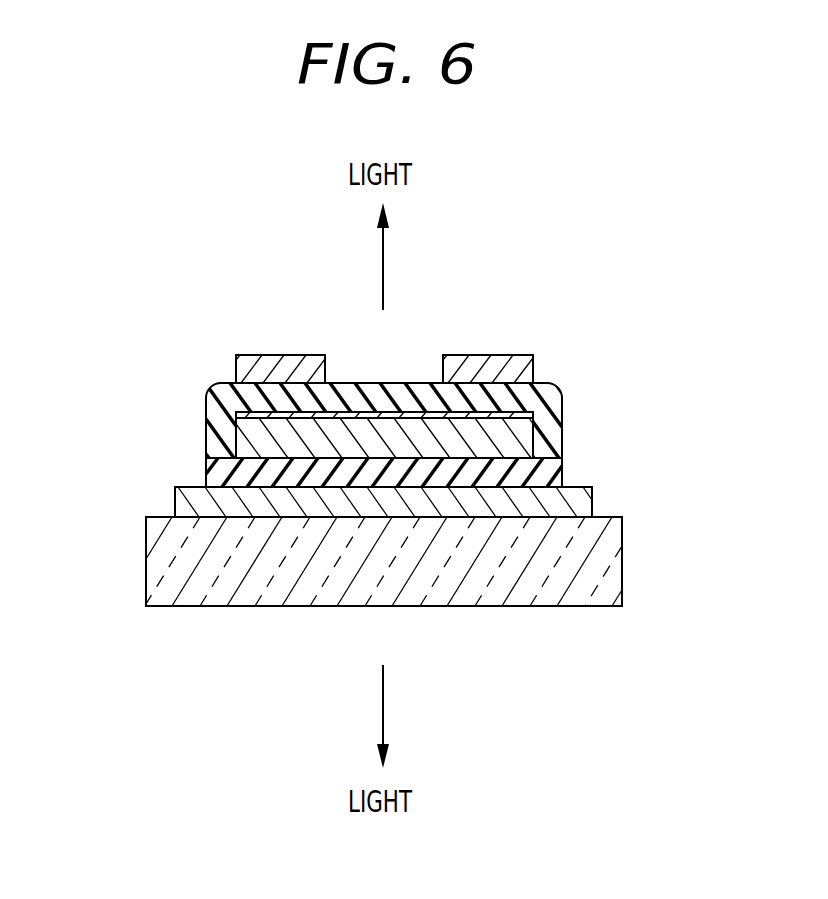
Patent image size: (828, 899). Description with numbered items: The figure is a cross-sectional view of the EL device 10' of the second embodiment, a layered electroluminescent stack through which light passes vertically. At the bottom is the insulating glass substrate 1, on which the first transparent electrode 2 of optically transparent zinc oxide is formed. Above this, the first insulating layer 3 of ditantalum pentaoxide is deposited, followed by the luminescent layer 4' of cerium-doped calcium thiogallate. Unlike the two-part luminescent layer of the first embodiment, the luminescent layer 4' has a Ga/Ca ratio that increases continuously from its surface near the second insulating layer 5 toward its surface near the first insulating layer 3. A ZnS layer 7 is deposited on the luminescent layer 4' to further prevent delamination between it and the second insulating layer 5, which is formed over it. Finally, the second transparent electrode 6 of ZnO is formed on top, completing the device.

The insulating glass substrate 1 is at (598, 582).
The first transparent electrode 2 is at (553, 507).
The first insulating layer 3 is at (547, 475).
The luminescent layer 4' is at (473, 449).
The second insulating layer 5 is at (537, 400).
The second transparent electrode 6 is at (525, 363).
The ZnS layer 7 is at (527, 417).
The EL device 10' is at (391, 433).